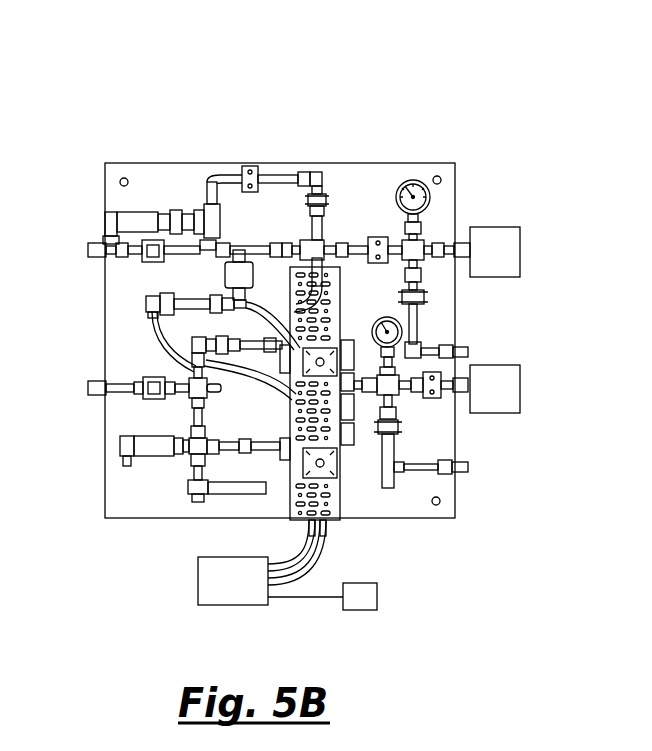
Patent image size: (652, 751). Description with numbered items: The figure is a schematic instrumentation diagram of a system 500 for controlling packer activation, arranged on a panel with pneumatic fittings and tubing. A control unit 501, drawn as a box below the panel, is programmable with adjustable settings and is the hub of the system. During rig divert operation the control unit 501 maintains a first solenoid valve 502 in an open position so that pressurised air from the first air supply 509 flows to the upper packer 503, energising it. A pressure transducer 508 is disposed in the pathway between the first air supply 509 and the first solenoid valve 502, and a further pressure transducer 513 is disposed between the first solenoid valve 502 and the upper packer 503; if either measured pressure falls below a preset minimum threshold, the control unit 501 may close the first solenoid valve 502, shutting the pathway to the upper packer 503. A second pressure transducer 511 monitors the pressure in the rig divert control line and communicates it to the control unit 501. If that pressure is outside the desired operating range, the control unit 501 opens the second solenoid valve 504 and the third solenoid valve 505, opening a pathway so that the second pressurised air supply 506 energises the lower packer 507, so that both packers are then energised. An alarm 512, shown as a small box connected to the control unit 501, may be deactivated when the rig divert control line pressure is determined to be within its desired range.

The system 500 is at (420, 86).
The control unit 501 is at (213, 578).
The first solenoid valve 502 is at (239, 268).
The upper packer 503 is at (492, 232).
The second solenoid valve 504 is at (330, 470).
The third solenoid valve 505 is at (328, 363).
The second pressurised air supply 506 is at (92, 389).
The lower packer 507 is at (492, 407).
The pressure transducer 508 is at (144, 212).
The first air supply 509 is at (90, 250).
The second pressure transducer 511 is at (122, 447).
The alarm 512 is at (377, 597).
The pressure transducer 513 is at (148, 303).